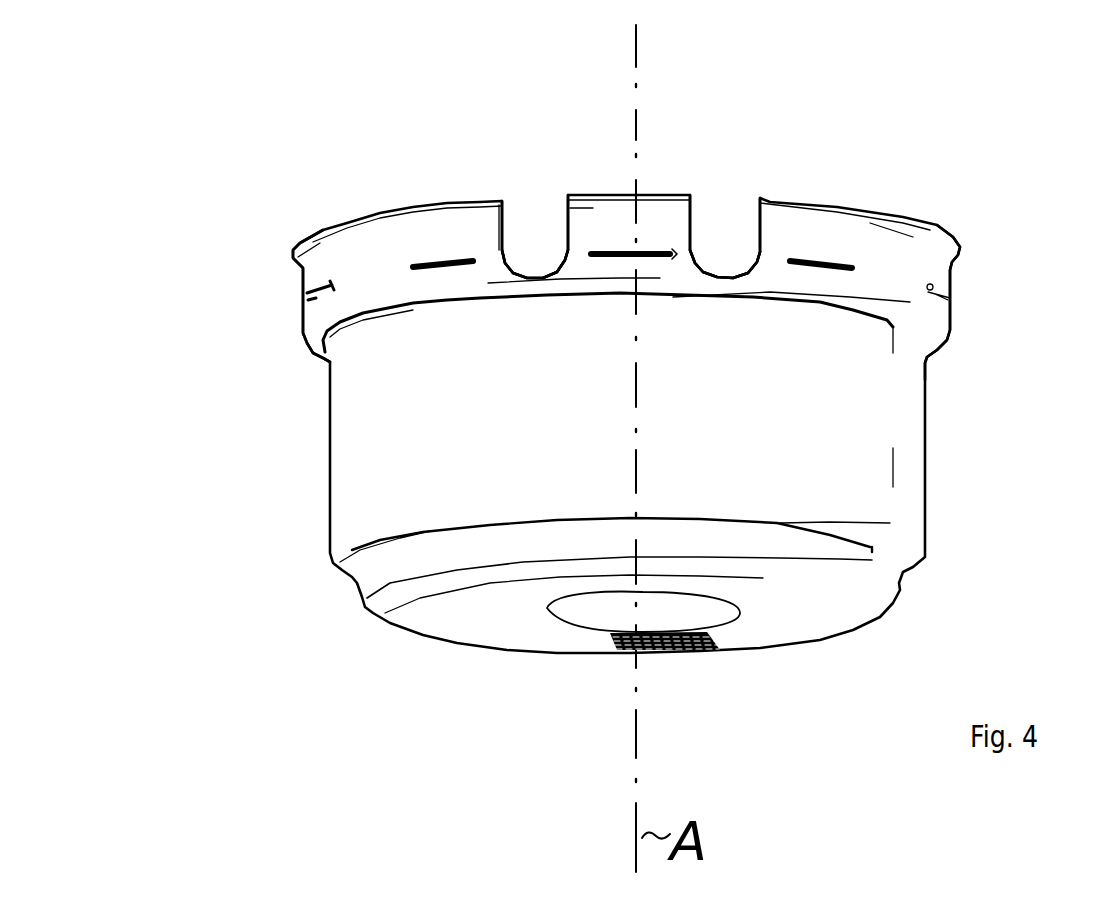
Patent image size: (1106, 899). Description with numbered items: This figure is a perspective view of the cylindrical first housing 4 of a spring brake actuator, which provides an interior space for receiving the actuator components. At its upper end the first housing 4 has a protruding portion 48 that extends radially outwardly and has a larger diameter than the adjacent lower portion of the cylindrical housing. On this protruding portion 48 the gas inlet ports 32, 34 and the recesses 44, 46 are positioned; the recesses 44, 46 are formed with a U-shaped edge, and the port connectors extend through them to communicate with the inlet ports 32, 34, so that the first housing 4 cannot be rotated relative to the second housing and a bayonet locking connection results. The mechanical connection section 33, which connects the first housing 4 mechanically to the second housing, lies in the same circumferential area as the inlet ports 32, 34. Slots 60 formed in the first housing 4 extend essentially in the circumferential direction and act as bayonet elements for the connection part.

The first housing 4 is at (190, 514).
The gas inlet port 32 is at (531, 134).
The mechanical connection section 33 is at (996, 282).
The gas inlet port 34 is at (738, 130).
The recess 44 is at (527, 237).
The recess 46 is at (732, 222).
The protruding portion 48 is at (290, 326).
The slots 60 is at (617, 250).